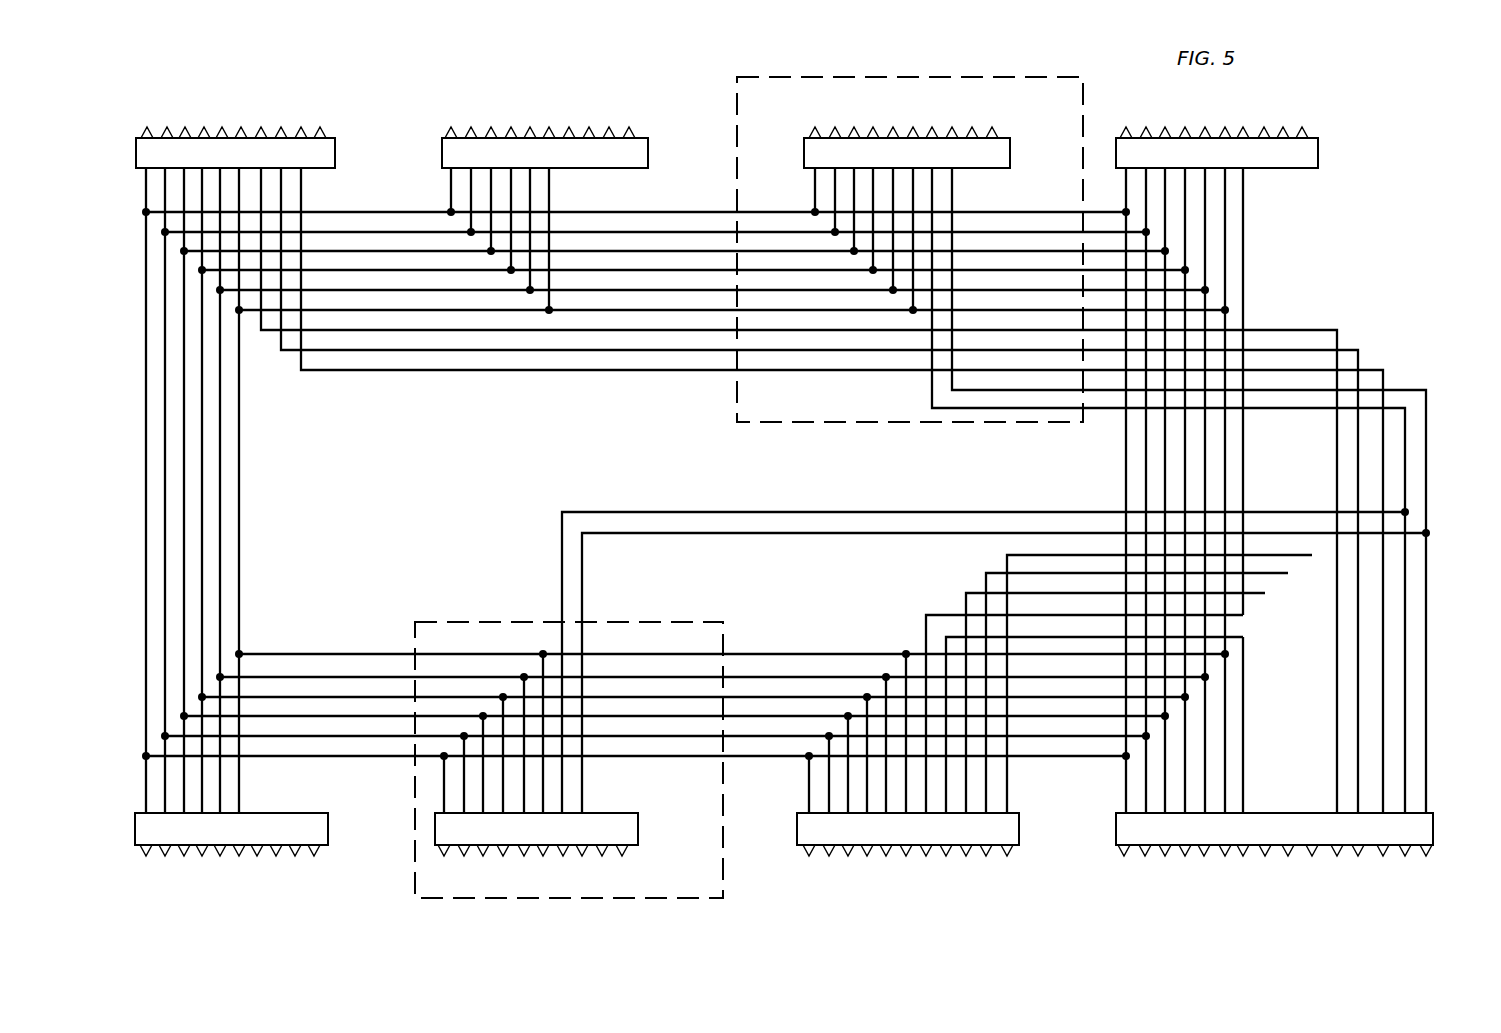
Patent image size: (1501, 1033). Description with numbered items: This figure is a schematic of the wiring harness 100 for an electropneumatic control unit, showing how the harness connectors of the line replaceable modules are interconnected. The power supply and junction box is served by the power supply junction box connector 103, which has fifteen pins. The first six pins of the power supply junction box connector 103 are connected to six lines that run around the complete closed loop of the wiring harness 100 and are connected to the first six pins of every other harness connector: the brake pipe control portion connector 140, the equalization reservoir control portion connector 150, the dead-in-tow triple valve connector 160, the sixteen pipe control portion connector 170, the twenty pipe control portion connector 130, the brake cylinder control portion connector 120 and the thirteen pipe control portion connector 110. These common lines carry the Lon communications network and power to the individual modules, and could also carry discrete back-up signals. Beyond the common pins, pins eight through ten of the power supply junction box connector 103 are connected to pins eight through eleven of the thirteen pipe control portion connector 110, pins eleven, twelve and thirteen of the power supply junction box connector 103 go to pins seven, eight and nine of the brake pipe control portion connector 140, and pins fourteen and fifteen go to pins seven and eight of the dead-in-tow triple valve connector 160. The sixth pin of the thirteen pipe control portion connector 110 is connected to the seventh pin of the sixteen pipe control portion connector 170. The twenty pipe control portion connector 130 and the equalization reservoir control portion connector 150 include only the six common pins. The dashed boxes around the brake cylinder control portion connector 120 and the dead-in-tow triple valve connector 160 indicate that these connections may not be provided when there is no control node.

The wiring harness 100 is at (1356, 286).
The power supply junction box harness connector 103 is at (1303, 854).
The 13 pipe control portion harness connector 110 is at (937, 854).
The brake cylinder control portion harness connector 120 is at (569, 760).
The 20 pipe control portion harness connector 130 is at (260, 854).
The brake pipe control portion harness connector 140 is at (265, 133).
The equalization reservoir control portion harness connector 150 is at (574, 133).
The dead-in-tow triple valve harness connector 160 is at (910, 249).
The 16 pipe control portion harness connector 170 is at (1246, 133).